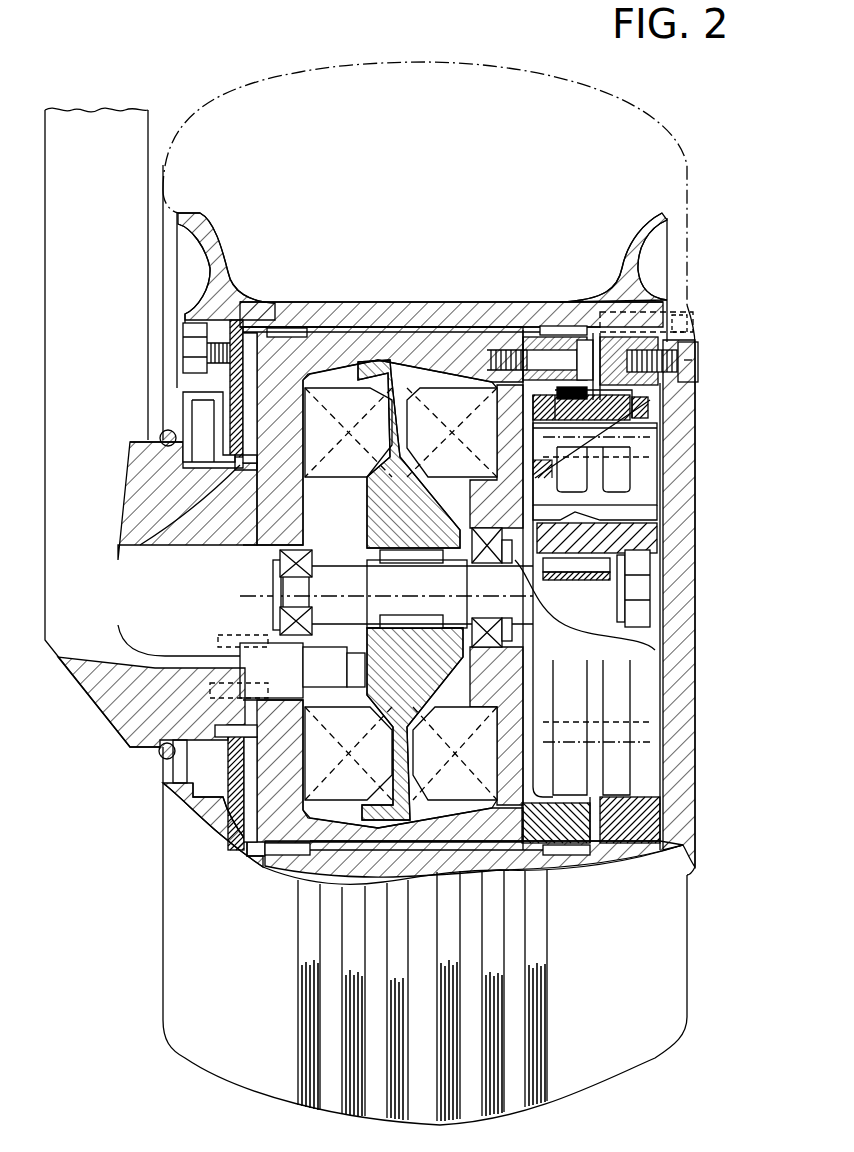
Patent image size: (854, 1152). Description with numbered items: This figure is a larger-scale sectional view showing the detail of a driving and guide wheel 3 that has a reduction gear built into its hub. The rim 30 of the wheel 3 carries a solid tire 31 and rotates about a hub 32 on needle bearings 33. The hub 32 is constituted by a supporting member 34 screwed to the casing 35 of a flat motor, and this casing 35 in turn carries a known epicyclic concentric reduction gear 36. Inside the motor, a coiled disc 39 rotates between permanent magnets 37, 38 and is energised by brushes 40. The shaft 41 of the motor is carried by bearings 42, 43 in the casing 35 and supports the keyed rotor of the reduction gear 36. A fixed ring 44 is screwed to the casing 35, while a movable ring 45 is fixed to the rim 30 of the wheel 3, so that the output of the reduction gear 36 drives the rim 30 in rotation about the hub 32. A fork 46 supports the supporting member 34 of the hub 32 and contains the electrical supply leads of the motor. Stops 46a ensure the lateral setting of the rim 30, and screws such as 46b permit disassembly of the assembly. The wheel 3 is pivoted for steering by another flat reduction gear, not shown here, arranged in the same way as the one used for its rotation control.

The wheel 3 is at (146, 899).
The rim 30 is at (200, 231).
The solid tire 31 is at (235, 1004).
The hub 32 is at (662, 477).
The needle bearings 33 is at (272, 328).
The supporting member 34 is at (200, 415).
The casing 35 is at (375, 335).
The epicyclic concentric reduction gear 36 is at (598, 650).
The permanent magnet 37 is at (378, 443).
The permanent magnet 38 is at (445, 443).
The coiled disc 39 is at (383, 812).
The brushes 40 is at (357, 663).
The shaft 41 is at (632, 570).
The bearing 42 is at (487, 648).
The bearing 43 is at (285, 618).
The fixed ring 44 is at (468, 320).
The movable ring 45 is at (623, 340).
The fork 46 is at (113, 145).
The stops 46a is at (240, 465).
The screws 46b is at (675, 316).